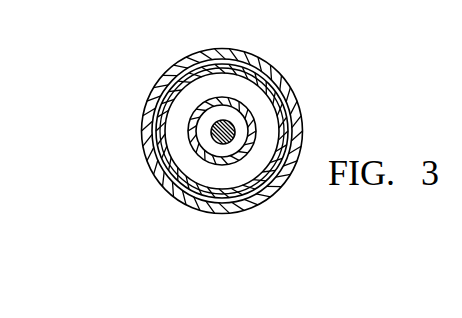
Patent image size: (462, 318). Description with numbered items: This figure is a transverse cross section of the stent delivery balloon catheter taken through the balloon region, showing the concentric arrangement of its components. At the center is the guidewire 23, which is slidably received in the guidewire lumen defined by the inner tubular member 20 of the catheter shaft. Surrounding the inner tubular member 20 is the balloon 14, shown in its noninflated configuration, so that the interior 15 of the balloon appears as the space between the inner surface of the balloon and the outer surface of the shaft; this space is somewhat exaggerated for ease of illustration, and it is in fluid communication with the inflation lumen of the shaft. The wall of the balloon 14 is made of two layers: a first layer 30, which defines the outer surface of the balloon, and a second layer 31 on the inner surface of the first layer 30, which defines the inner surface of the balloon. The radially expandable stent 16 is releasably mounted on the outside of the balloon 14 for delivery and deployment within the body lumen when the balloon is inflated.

The balloon 14 is at (156, 106).
The interior of the balloon 15 is at (193, 172).
The radially expandable stent 16 is at (177, 63).
The inner tubular member 20 is at (188, 138).
The guidewire 23 is at (222, 119).
The first layer 30 is at (278, 88).
The second layer 31 is at (291, 120).